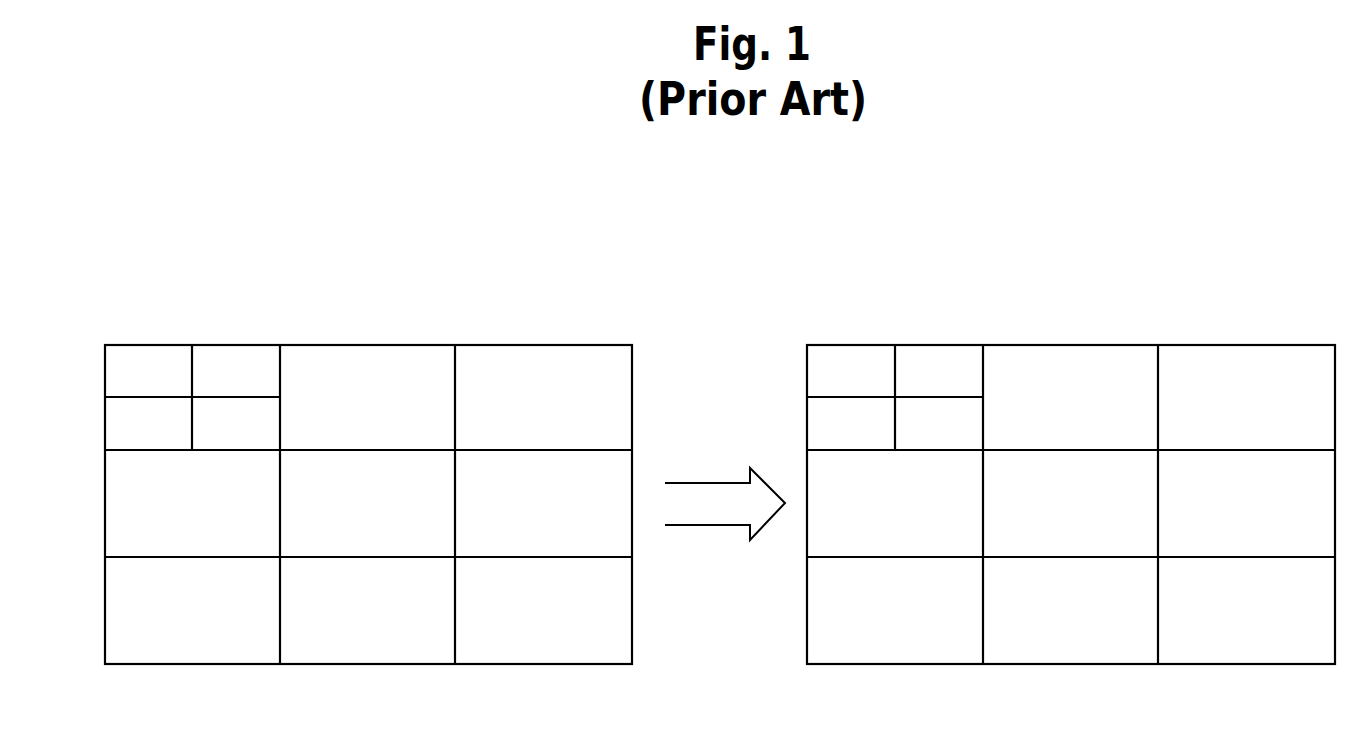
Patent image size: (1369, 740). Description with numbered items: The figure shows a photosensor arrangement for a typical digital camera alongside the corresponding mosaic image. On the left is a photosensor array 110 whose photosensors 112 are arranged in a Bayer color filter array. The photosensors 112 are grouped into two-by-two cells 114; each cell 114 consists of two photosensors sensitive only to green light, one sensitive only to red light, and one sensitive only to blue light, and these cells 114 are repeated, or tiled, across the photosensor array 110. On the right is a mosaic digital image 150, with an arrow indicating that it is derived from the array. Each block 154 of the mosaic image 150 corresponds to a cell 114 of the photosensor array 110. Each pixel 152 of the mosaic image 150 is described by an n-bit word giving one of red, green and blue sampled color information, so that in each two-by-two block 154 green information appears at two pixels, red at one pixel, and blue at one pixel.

The photosensor array 110 is at (530, 287).
The photosensor 112 is at (122, 362).
The cell 114 is at (128, 327).
The mosaic digital image 150 is at (1135, 287).
The pixel 152 is at (895, 397).
The block 154 is at (828, 327).